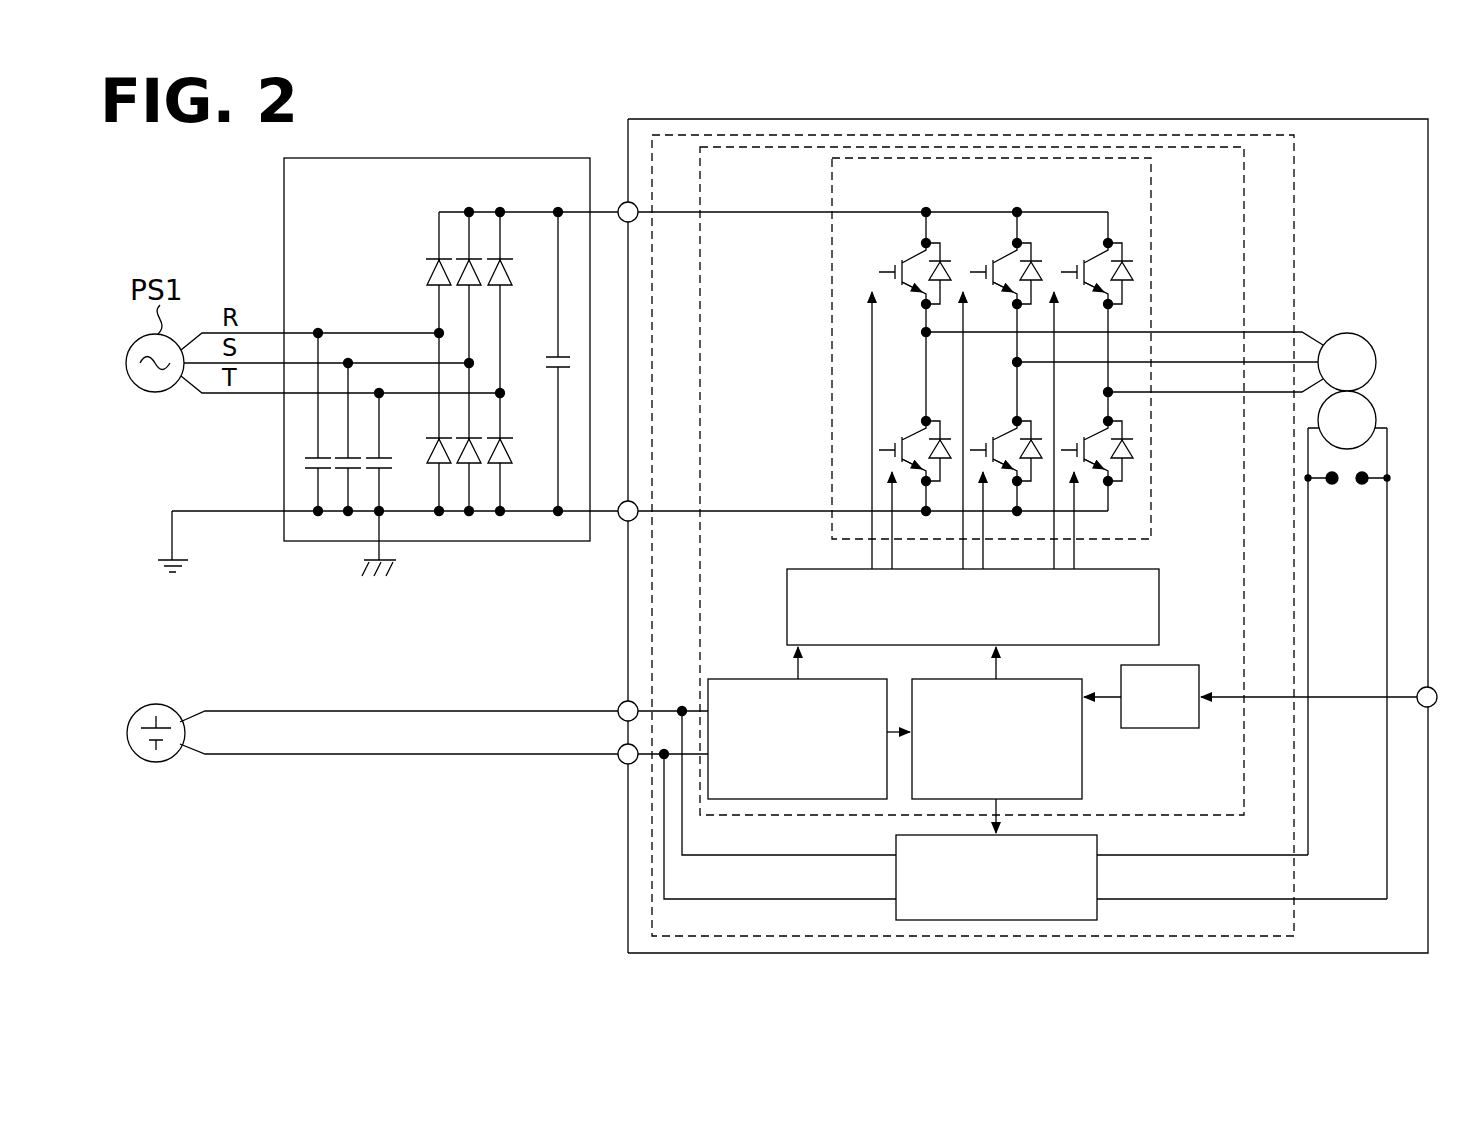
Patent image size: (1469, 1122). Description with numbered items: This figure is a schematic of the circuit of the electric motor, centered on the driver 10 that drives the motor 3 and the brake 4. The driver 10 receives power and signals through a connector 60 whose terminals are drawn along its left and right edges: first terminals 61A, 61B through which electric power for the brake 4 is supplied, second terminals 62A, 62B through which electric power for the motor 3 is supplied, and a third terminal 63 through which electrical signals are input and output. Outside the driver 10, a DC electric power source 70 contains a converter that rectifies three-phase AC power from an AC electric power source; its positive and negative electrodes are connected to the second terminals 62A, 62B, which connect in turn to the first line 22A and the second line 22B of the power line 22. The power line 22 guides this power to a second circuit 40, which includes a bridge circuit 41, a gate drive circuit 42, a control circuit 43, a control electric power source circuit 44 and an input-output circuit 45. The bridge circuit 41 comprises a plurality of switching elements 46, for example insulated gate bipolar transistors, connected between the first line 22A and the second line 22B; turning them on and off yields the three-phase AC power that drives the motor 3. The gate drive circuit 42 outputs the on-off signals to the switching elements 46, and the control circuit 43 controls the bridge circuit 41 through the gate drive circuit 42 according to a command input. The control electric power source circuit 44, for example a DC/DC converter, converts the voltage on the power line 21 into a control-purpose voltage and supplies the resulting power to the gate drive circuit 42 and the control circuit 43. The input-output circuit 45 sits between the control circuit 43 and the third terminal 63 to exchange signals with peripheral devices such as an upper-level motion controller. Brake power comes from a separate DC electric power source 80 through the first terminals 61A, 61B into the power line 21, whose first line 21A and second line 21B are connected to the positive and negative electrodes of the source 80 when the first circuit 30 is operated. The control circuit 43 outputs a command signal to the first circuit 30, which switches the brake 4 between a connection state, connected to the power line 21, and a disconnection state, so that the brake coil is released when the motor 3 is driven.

The DC electric power source 70 is at (356, 158).
The connector 60 is at (620, 182).
The second terminal 62A is at (620, 205).
The second terminal 62B is at (620, 522).
The first terminal 61A is at (618, 703).
The first terminal 61B is at (618, 763).
The power line 22 is at (873, 296).
The first line 22A is at (735, 211).
The second line 22B is at (737, 509).
The switching element 46 is at (1092, 241).
The bridge circuit 41 is at (1150, 190).
The driver 10 is at (1200, 135).
The second circuit 40 is at (1245, 185).
The motor 3 is at (1347, 333).
The brake 4 is at (1372, 400).
The third terminal 63 is at (1430, 688).
The gate drive circuit 42 is at (1160, 605).
The control circuit 43 is at (1083, 760).
The control electric power source circuit 44 is at (750, 678).
The input-output circuit 45 is at (1178, 729).
The first circuit 30 is at (1098, 885).
The power line 21 is at (976, 831).
The first line 21A is at (800, 855).
The second line 21B is at (1024, 825).
The DC electric power source 80 is at (158, 705).